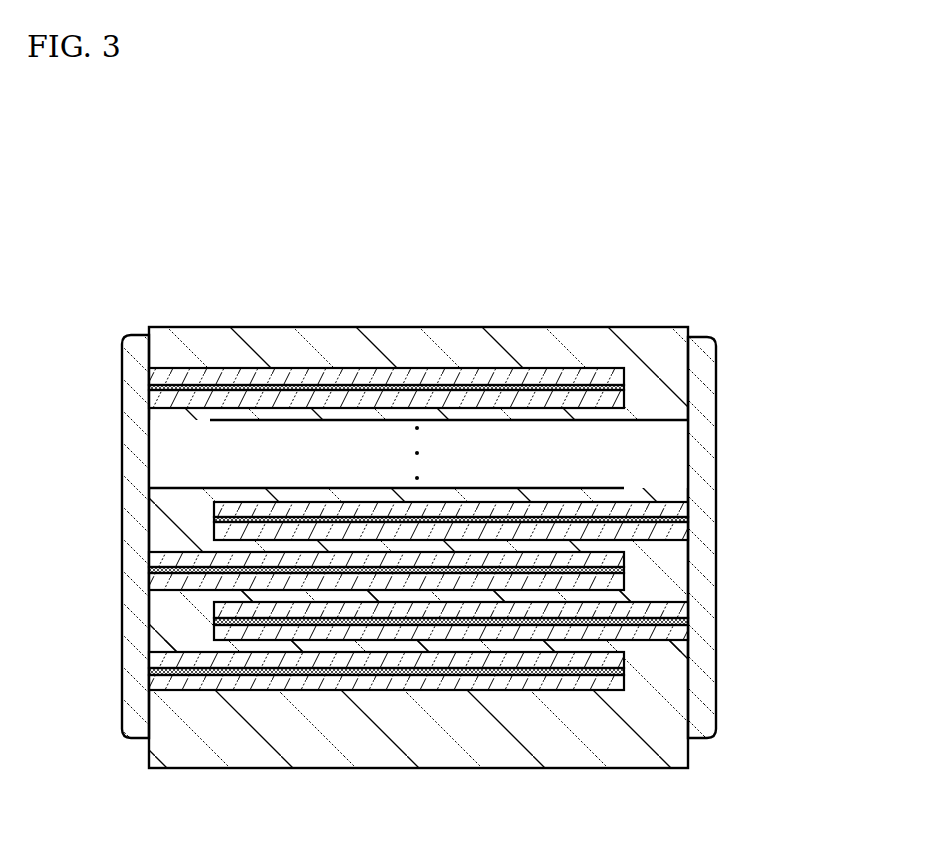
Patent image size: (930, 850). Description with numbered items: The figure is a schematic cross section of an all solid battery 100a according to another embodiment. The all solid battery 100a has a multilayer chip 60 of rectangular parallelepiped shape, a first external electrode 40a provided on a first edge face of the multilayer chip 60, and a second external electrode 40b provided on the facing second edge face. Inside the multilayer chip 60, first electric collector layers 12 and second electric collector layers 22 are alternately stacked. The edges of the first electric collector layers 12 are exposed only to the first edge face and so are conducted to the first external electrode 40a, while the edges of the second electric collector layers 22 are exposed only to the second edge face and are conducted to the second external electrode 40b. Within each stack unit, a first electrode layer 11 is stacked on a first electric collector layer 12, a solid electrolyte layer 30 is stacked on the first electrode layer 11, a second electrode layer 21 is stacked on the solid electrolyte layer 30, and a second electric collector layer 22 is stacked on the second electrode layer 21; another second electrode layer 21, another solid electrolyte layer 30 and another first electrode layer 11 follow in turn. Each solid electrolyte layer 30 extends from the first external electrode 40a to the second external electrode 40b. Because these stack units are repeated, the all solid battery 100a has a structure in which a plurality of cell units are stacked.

The all solid battery 100a is at (818, 204).
The multilayer chip 60 is at (523, 315).
The first external electrode 40a is at (122, 398).
The second external electrode 40b is at (716, 398).
The first electrode layer 11 is at (160, 558).
The first electric collector layer 12 is at (160, 570).
The second electrode layer 21 is at (683, 603).
The second electric collector layer 22 is at (683, 622).
The solid electrolyte layer 30 is at (315, 650).